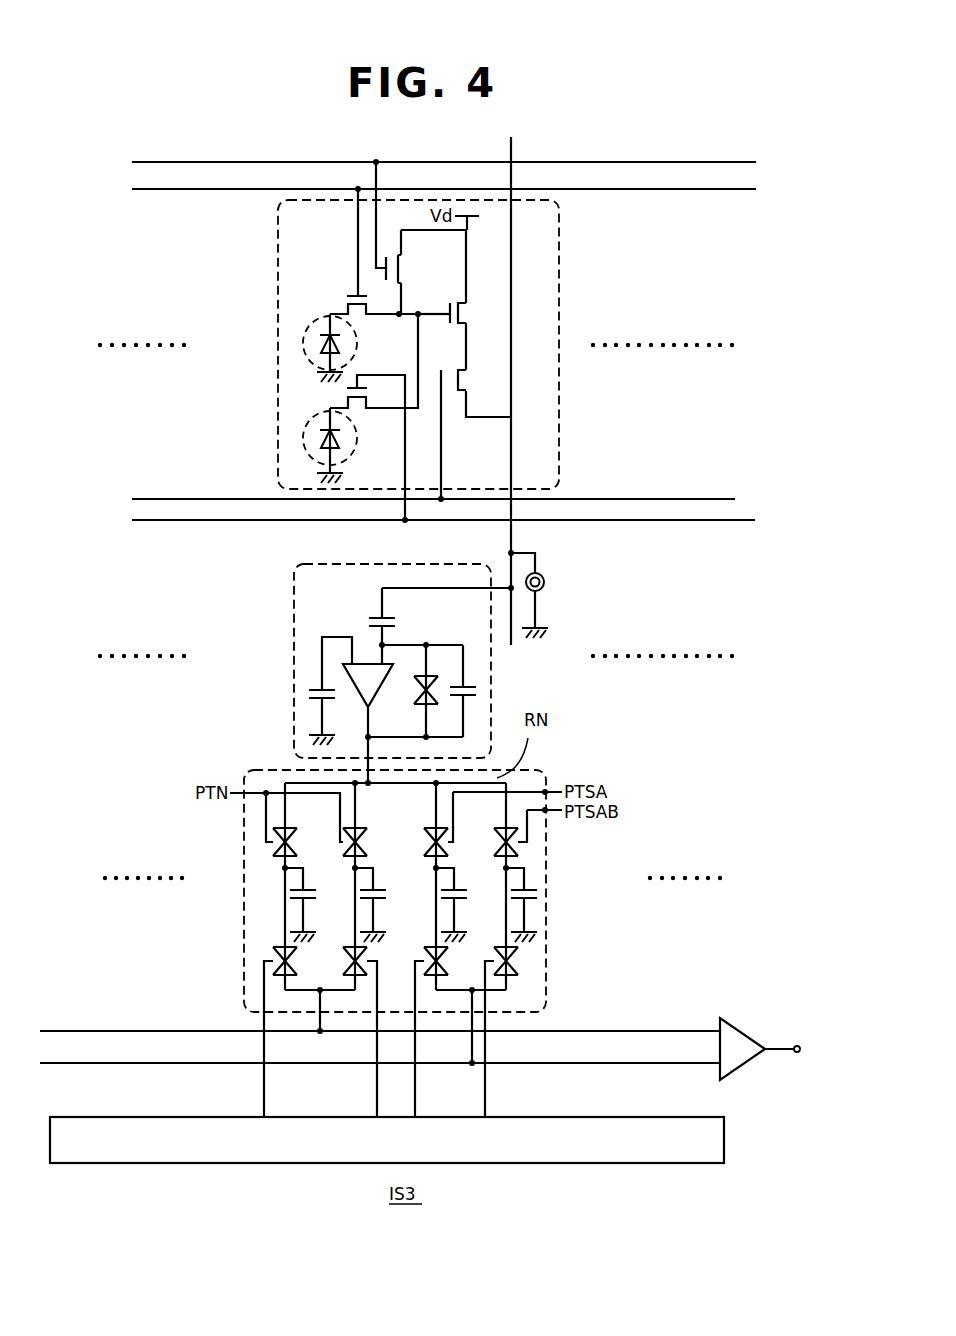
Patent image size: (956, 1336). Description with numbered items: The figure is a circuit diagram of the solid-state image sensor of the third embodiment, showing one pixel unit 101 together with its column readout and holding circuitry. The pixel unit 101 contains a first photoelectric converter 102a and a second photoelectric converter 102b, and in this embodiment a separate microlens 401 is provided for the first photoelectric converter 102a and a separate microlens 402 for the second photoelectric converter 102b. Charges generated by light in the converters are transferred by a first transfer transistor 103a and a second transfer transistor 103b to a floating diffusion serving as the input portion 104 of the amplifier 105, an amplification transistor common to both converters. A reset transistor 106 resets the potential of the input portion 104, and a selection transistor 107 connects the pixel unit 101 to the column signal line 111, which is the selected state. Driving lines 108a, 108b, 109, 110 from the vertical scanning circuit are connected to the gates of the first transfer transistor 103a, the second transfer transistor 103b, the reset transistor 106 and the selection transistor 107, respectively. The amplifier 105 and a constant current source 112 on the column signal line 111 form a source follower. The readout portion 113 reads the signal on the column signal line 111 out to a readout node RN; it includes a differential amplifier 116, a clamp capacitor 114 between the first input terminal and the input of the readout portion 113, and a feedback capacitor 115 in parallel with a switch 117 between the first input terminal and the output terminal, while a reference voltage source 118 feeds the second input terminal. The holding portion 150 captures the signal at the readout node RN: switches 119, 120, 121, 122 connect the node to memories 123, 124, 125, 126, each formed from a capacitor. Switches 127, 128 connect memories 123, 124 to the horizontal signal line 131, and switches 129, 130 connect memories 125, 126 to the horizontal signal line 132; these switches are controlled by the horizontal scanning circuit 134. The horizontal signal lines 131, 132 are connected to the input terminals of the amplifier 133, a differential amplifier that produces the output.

The pixel unit 101 is at (560, 262).
The first photoelectric converter 102a is at (318, 343).
The second photoelectric converter 102b is at (318, 442).
The first transfer transistor 103a is at (356, 294).
The second transfer transistor 103b is at (346, 394).
The input portion 104 is at (436, 318).
The amplifier 105 is at (462, 312).
The reset transistor 106 is at (403, 268).
The selection transistor 107 is at (468, 374).
The driving line 108a is at (770, 180).
The driving line 108b is at (755, 520).
The driving line 109 is at (770, 153).
The driving line 110 is at (735, 499).
The column signal line 111 is at (513, 536).
The constant current source 112 is at (545, 578).
The readout portion 113 is at (292, 607).
The clamp capacitor 114 is at (369, 618).
The feedback capacitor 115 is at (478, 688).
The differential amplifier 116 is at (360, 694).
The switch 117 is at (414, 694).
The reference voltage source 118 is at (300, 694).
The switch 119 is at (294, 836).
The switch 120 is at (378, 824).
The switch 121 is at (426, 838).
The switch 122 is at (494, 836).
The memory 123 is at (312, 882).
The memory 124 is at (382, 882).
The memory 125 is at (462, 882).
The memory 126 is at (536, 884).
The switch 127 is at (278, 948).
The switch 128 is at (348, 948).
The switch 129 is at (428, 948).
The switch 130 is at (498, 948).
The horizontal signal line 131 is at (74, 1030).
The horizontal signal line 132 is at (74, 1065).
The amplifier 133 is at (745, 1066).
The horizontal scanning circuit 134 is at (724, 1140).
The holding portion 150 is at (547, 944).
The microlens 401 is at (283, 334).
The microlens 402 is at (283, 445).